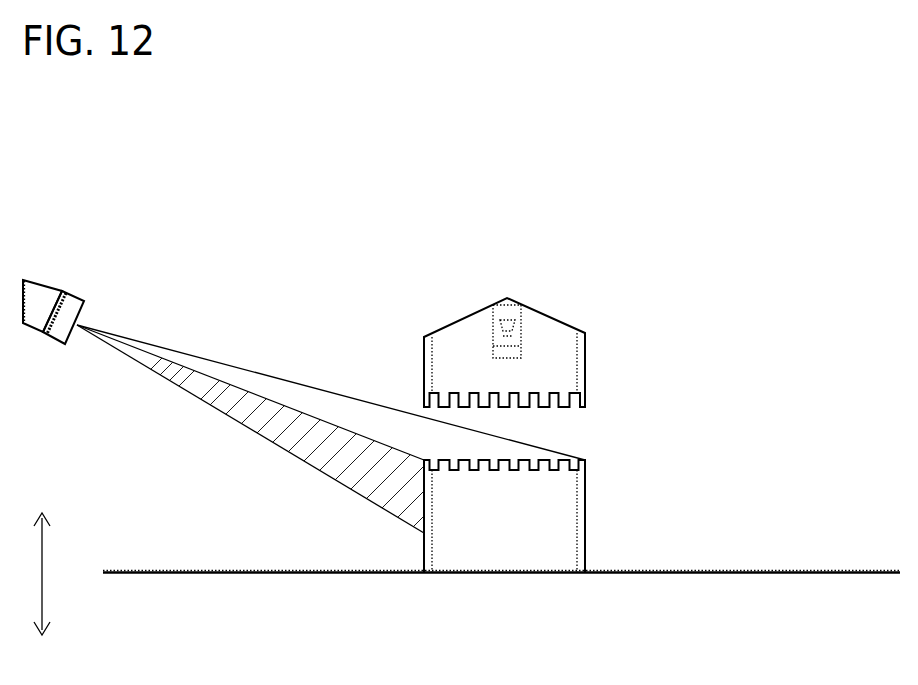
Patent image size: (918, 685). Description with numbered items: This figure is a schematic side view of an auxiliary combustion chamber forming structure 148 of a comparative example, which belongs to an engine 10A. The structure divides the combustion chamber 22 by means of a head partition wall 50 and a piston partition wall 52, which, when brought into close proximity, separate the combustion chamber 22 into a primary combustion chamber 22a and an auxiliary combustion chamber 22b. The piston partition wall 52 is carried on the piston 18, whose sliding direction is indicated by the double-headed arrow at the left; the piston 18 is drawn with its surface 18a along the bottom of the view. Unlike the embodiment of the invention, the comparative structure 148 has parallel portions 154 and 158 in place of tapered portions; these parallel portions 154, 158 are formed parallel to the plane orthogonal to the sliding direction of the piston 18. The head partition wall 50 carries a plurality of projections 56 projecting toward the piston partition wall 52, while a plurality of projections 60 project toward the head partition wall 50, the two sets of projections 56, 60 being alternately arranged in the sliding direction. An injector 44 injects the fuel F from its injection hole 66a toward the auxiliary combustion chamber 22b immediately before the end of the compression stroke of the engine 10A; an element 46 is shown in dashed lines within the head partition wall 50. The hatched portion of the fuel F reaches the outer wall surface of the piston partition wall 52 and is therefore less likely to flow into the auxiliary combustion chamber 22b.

The engine 10A is at (309, 149).
The auxiliary combustion chamber forming structure 148 is at (391, 238).
The injector 44 is at (48, 290).
The injection hole 66a is at (82, 322).
The fuel F is at (183, 356).
The light fixture 46 is at (507, 298).
The head partition wall 50 is at (424, 353).
The parallel portion 154 is at (424, 394).
The projections 56 is at (585, 407).
The projections 60 is at (560, 455).
The parallel portion 158 is at (585, 465).
The piston partition wall 52 is at (585, 520).
The combustion chamber 22 is at (720, 446).
The primary combustion chamber 22a is at (342, 552).
The auxiliary combustion chamber 22b is at (553, 552).
The piston 18 is at (845, 571).
The floor surface 18a is at (777, 571).